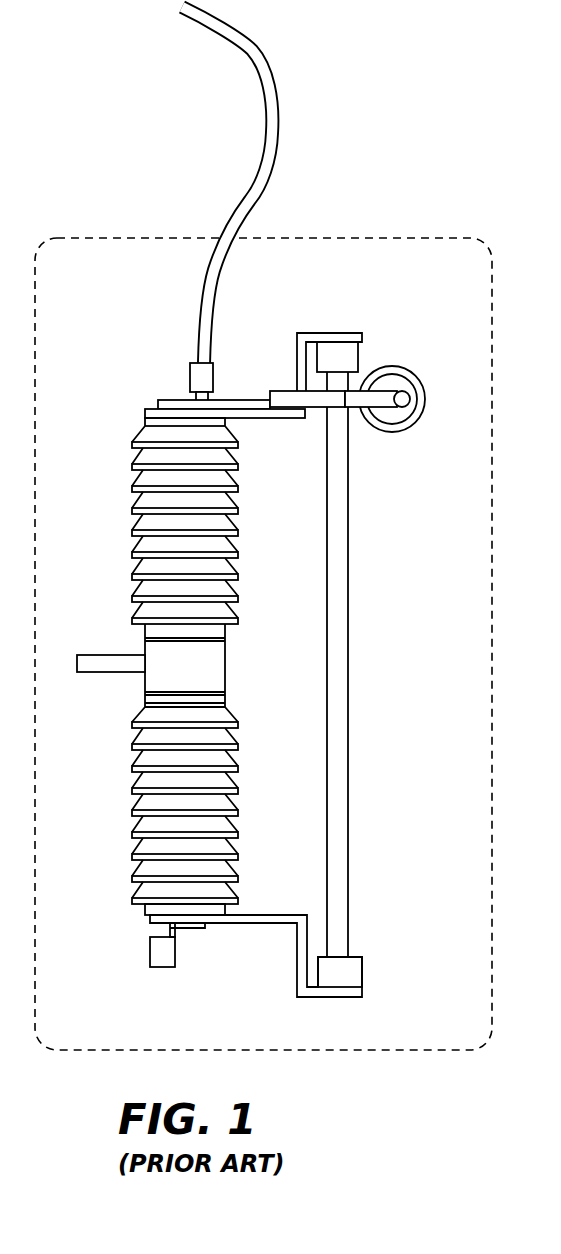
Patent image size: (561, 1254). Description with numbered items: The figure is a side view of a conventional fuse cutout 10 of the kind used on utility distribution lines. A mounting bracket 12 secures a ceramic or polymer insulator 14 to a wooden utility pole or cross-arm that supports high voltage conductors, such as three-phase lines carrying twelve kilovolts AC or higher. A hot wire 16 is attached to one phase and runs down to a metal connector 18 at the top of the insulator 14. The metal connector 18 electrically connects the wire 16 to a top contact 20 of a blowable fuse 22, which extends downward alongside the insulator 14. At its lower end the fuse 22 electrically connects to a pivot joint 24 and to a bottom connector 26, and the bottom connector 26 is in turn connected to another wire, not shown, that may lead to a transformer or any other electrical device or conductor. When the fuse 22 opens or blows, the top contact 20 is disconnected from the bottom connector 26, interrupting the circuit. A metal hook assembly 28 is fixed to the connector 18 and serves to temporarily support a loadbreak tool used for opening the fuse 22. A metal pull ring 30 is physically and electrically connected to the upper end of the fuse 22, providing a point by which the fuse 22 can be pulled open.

The fuse cutout 10 is at (127, 237).
The mounting bracket 12 is at (128, 673).
The insulator 14 is at (140, 432).
The hot wire 16 is at (278, 142).
The metal connector 18 is at (213, 397).
The top contact 20 is at (328, 337).
The fuse 22 is at (349, 522).
The pivot joint 24 is at (363, 966).
The bottom connector 26 is at (176, 946).
The hook assembly 28 is at (394, 391).
The pull ring 30 is at (426, 400).